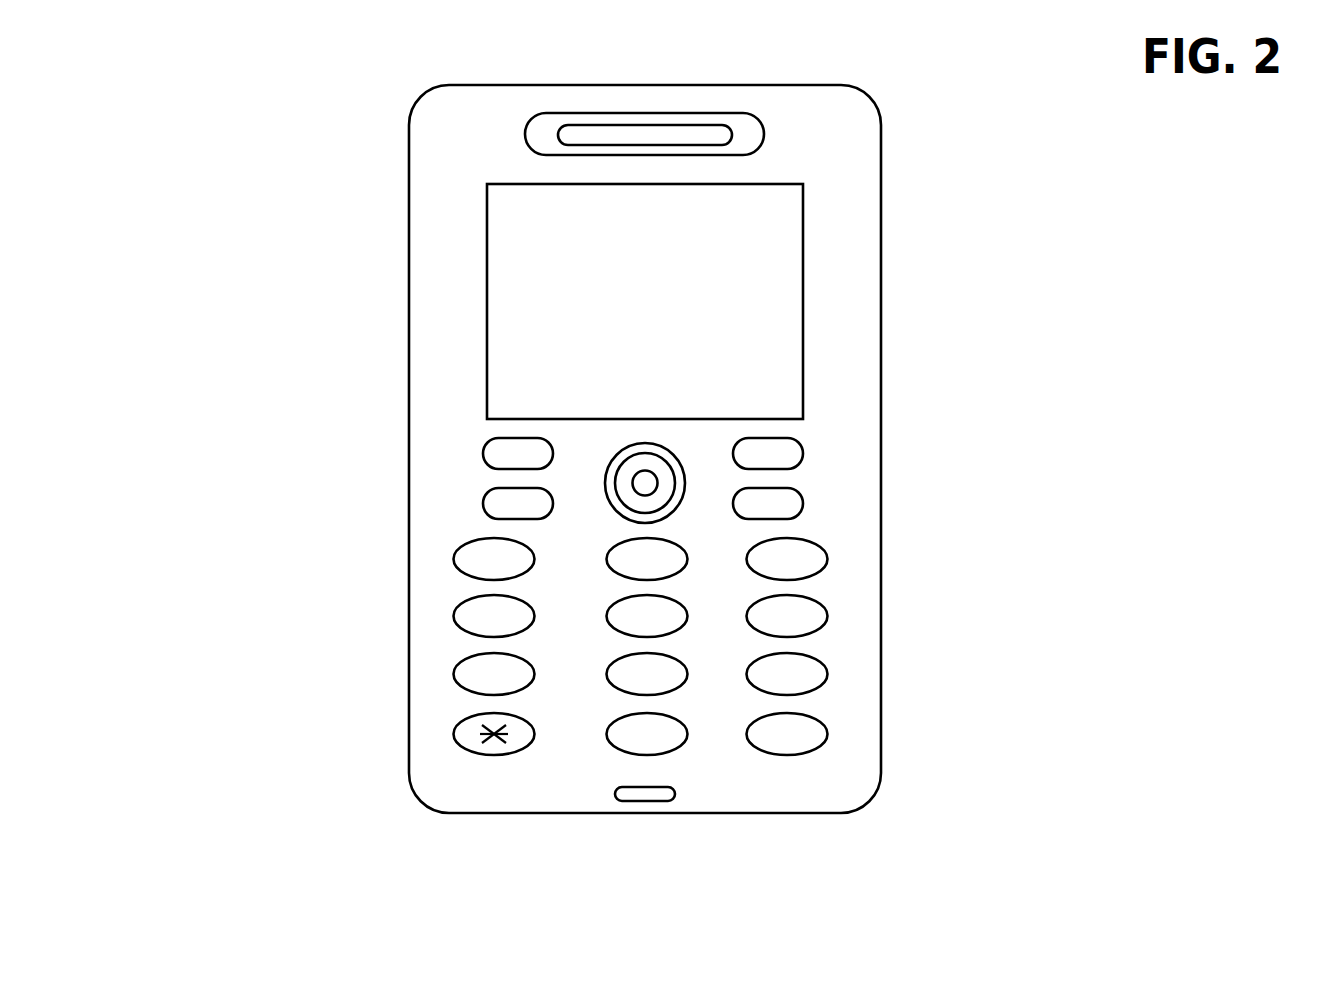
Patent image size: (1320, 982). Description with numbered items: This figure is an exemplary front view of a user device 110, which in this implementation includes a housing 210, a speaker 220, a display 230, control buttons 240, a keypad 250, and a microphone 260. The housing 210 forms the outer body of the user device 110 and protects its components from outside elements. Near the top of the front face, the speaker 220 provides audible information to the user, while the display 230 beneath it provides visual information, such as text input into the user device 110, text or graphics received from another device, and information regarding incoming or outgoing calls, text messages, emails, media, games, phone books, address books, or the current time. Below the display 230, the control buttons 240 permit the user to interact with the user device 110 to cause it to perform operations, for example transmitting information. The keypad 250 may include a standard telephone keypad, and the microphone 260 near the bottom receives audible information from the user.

The user device 110 is at (305, 88).
The housing 210 is at (409, 452).
The speaker 220 is at (643, 117).
The display 230 is at (803, 302).
The control buttons 240 is at (822, 430).
The keypad 250 is at (842, 755).
The microphone 260 is at (645, 801).